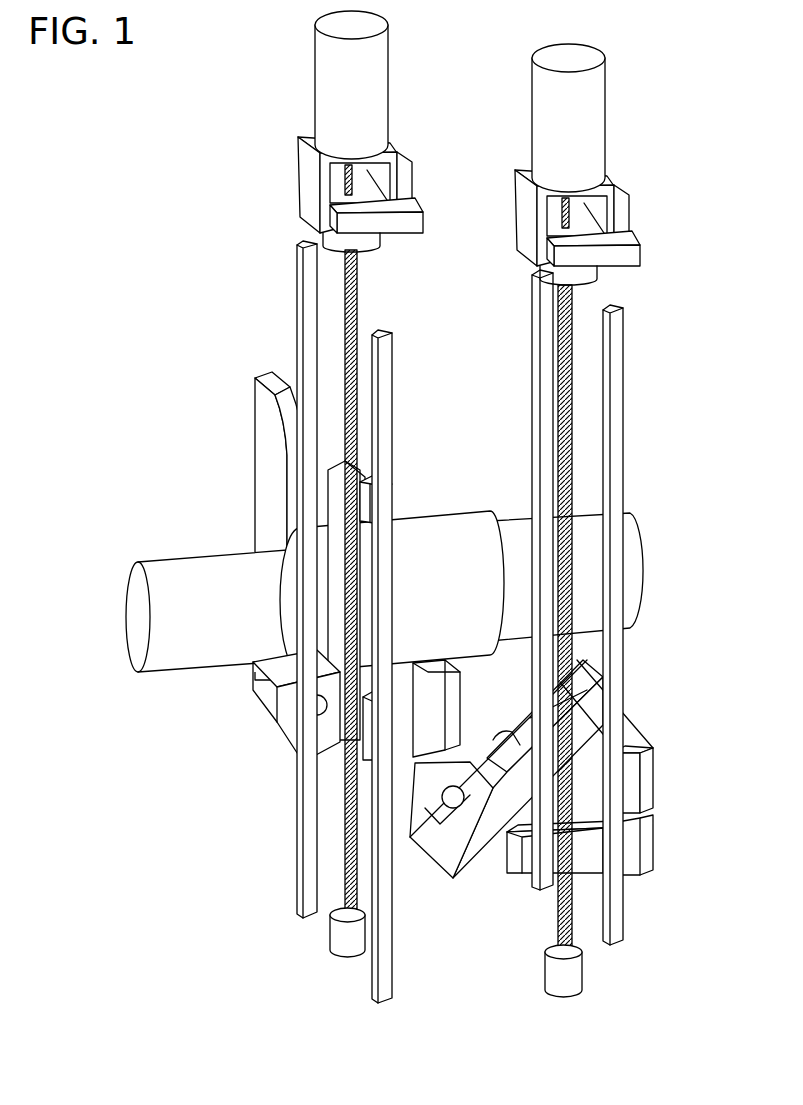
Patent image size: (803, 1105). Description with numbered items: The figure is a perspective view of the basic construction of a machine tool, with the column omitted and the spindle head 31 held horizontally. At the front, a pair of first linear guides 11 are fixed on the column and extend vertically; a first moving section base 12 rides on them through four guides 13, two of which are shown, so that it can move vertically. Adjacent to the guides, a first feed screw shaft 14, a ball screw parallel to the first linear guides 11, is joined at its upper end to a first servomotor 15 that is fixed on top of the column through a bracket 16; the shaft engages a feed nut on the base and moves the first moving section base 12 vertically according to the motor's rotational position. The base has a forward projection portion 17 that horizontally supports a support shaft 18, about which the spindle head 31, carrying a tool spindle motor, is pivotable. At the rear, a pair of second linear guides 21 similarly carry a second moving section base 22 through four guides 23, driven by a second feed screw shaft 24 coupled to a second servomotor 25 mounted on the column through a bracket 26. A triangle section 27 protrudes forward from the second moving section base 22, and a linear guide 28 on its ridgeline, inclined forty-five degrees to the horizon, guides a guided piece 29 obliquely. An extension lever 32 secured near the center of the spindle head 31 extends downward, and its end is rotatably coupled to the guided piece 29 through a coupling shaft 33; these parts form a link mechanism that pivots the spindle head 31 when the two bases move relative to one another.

The first linear guide 11 is at (300, 250).
The first moving section base 12 is at (262, 425).
The guide 13 is at (368, 502).
The first feed screw shaft 14 is at (345, 350).
The first servomotor 15 is at (316, 50).
The bracket 16 is at (303, 160).
The projection portion 17 is at (273, 700).
The support shaft 18 is at (317, 708).
The second linear guide 21 is at (545, 307).
The second moving section base 22 is at (620, 730).
The guide 23 is at (630, 777).
The second feed screw shaft 24 is at (570, 393).
The second servomotor 25 is at (605, 116).
The bracket 26 is at (608, 217).
The triangle section 27 is at (480, 867).
The linear guide 28 is at (490, 865).
The guided piece 29 is at (440, 820).
The spindle head 31 is at (148, 555).
The extension lever 32 is at (450, 700).
The coupling shaft 33 is at (448, 798).